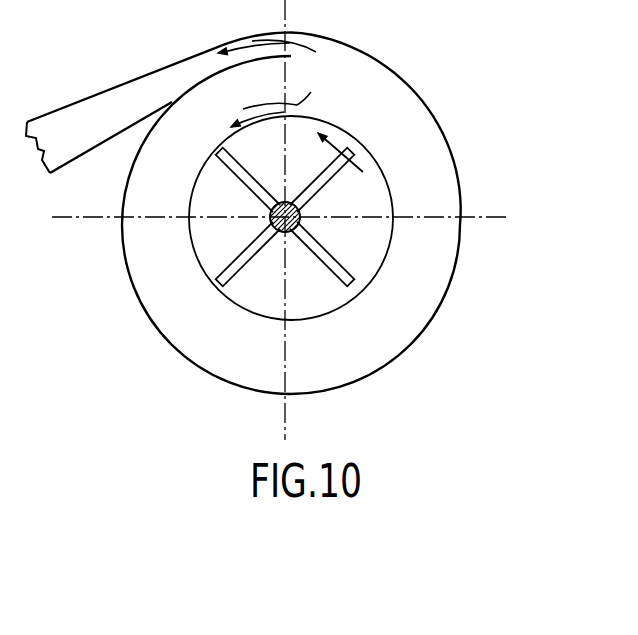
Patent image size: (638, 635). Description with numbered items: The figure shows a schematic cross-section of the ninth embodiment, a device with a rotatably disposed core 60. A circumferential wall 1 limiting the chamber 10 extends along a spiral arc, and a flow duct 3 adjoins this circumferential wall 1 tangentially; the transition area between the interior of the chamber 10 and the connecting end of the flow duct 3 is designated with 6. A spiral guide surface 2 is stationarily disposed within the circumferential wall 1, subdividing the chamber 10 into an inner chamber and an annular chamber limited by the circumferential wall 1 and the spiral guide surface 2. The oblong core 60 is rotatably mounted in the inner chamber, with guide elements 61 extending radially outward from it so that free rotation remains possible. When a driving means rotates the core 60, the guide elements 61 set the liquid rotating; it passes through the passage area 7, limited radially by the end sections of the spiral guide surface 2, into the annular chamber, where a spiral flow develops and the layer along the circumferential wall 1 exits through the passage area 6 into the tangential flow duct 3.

The circumferential wall 1 is at (121, 200).
The spiral guide surface 2 is at (205, 166).
The flow duct 3 is at (57, 137).
The transition area 6 is at (276, 56).
The passage area 7 is at (280, 103).
The chamber 10 is at (154, 266).
The core 60 is at (302, 216).
The guide elements 61 is at (238, 166).